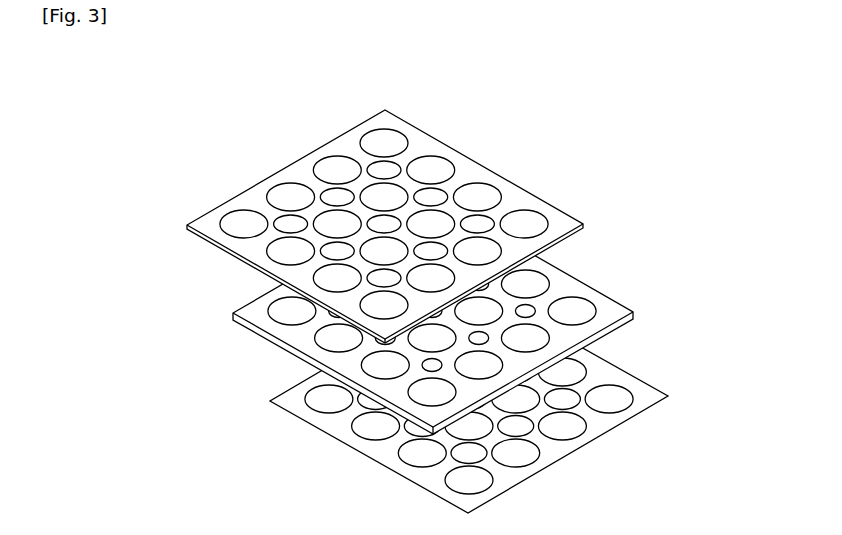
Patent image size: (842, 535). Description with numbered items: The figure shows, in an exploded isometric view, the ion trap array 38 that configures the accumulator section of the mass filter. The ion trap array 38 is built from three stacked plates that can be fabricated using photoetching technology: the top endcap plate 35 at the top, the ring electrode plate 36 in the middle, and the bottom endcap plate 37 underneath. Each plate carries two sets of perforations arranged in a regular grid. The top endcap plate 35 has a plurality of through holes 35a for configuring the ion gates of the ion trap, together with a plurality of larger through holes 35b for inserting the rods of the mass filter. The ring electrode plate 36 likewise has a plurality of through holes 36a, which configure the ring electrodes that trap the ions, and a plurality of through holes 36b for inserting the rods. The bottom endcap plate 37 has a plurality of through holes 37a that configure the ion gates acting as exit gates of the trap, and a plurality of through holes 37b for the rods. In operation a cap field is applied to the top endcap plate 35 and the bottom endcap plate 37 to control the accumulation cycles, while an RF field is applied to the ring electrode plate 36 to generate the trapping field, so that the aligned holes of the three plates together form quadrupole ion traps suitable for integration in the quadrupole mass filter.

The ion trap array 38 is at (113, 274).
The top endcap plate 35 is at (350, 201).
The through holes 35a is at (390, 170).
The through holes 35b is at (383, 143).
The ring electrode plate 36 is at (384, 315).
The through holes 36a is at (522, 311).
The through holes 36b is at (583, 307).
The bottom endcap plate 37 is at (414, 398).
The through holes 37a is at (563, 400).
The through holes 37b is at (615, 400).